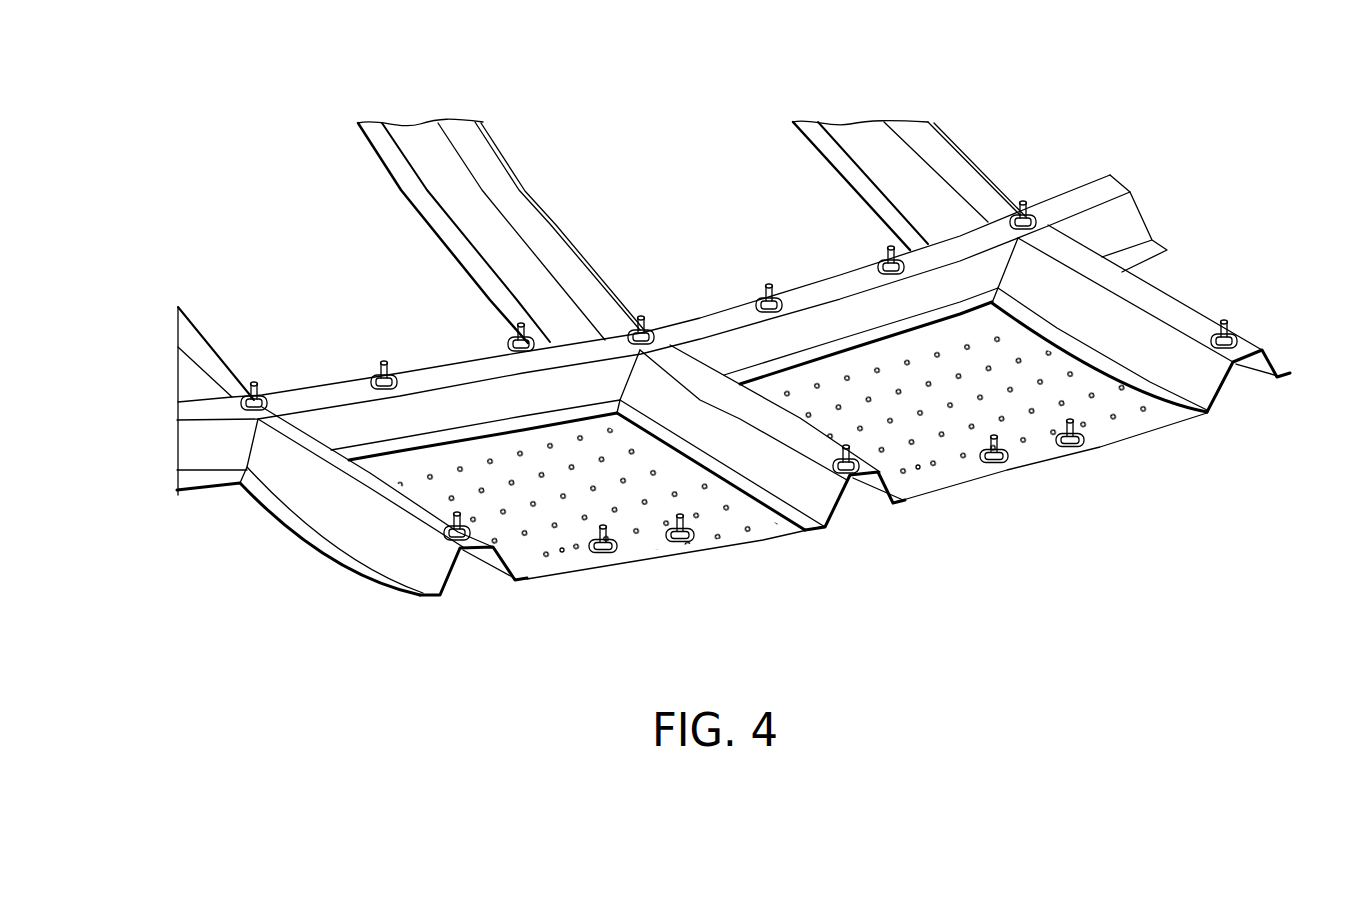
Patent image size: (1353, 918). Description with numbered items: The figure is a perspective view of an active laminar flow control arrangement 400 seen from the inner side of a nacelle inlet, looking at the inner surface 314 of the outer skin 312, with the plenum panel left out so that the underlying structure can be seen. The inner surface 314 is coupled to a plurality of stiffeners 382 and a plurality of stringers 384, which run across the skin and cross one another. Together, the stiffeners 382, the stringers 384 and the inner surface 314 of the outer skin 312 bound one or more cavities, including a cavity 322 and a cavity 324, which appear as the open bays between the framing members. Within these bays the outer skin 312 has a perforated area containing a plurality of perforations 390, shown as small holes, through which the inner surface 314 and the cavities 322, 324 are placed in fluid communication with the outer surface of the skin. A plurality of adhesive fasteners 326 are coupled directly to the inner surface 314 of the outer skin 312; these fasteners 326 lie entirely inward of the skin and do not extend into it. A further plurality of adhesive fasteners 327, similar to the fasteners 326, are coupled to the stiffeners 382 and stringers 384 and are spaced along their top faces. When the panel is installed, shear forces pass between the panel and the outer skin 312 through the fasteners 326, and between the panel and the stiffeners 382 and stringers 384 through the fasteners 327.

The active laminar flow control arrangement 400 is at (659, 130).
The outer skin 312 is at (963, 492).
The inner surface 314 is at (589, 491).
The cavity 322 is at (748, 528).
The cavity 324 is at (1132, 422).
The adhesive fasteners 326 is at (612, 550).
The adhesive fasteners 327 is at (263, 383).
The stiffeners 382 is at (217, 363).
The stringers 384 is at (698, 320).
The perforations 390 is at (562, 552).